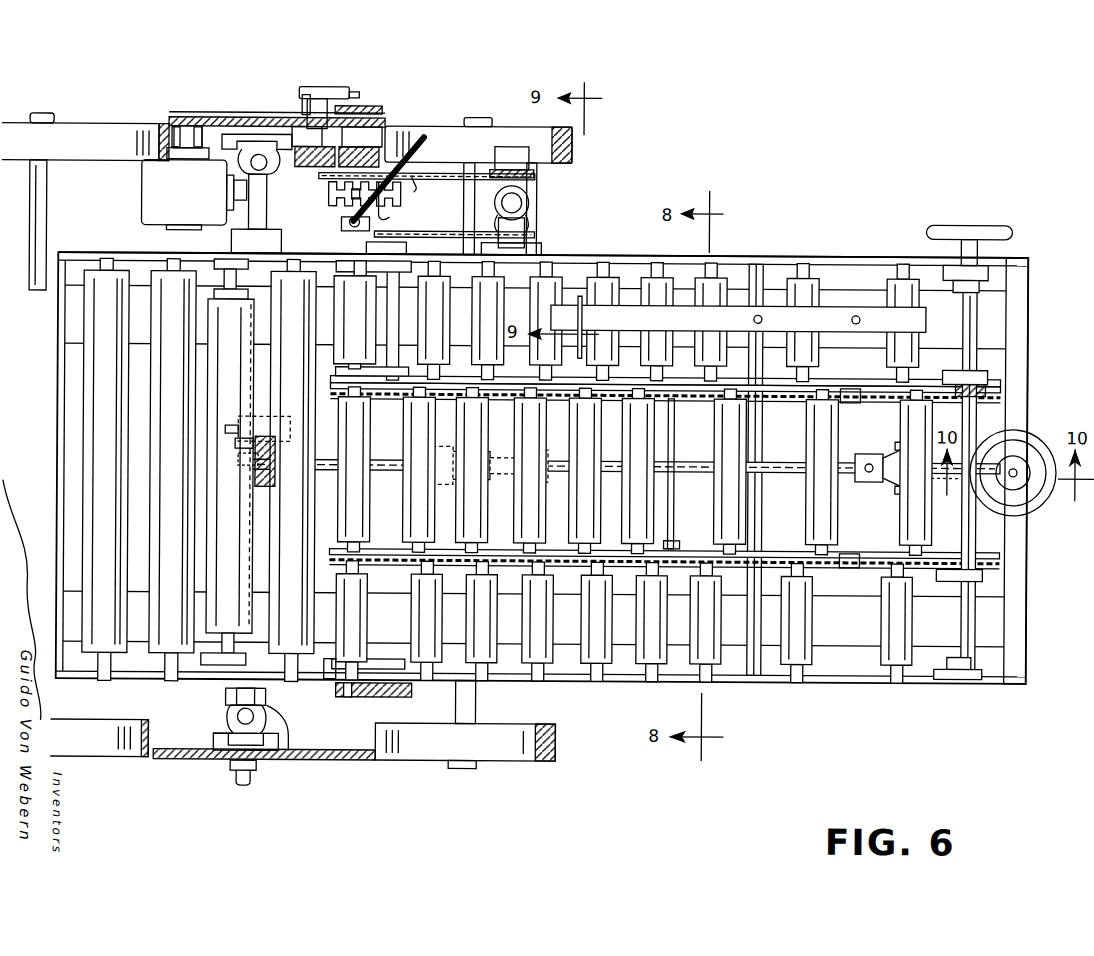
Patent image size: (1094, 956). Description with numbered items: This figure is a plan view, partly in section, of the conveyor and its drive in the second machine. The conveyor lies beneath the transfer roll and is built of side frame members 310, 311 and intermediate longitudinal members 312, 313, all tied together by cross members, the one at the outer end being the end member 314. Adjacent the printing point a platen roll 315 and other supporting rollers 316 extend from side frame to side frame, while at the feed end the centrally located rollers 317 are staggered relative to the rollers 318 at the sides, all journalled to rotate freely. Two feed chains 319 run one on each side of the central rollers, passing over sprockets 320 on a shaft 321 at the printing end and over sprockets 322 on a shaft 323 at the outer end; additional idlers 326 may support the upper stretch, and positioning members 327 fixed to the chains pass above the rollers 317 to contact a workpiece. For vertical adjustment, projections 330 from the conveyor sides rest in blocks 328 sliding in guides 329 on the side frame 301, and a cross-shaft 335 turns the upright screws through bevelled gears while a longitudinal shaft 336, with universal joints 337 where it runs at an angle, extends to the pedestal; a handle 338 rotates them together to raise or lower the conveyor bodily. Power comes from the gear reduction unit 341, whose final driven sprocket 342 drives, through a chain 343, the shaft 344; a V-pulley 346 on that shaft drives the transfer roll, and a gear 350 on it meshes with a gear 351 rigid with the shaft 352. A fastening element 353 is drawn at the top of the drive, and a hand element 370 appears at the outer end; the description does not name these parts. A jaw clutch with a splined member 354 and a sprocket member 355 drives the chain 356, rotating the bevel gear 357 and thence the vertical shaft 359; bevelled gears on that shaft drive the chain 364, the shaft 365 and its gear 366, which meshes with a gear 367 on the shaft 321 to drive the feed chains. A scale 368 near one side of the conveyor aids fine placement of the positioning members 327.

The side frame 301 is at (490, 751).
The side frame member 310 is at (768, 682).
The side frame member 311 is at (770, 262).
The intermediate longitudinal member 312 is at (774, 392).
The intermediate longitudinal member 313 is at (748, 556).
The end member 314 is at (1022, 290).
The platen roll 315 is at (207, 655).
The supporting rollers 316 is at (112, 656).
The centrally located rollers 317 is at (643, 460).
The side rollers 318 is at (806, 290).
The feed chains 319 is at (854, 394).
The sprockets 320 is at (337, 652).
The shaft 321 is at (323, 660).
The sprockets 322 is at (990, 395).
The shaft 323 is at (975, 338).
The additional idlers 326 is at (672, 546).
The positioning members 327 is at (674, 500).
The blocks 328 is at (255, 151).
The guides 329 is at (226, 135).
The projections 330 is at (266, 211).
The cross-shaft 335 is at (245, 282).
The longitudinal shaft 336 is at (742, 466).
The universal joints 337 is at (892, 462).
The handle 338 is at (236, 780).
The gear reduction unit 341 is at (193, 195).
The final driven sprocket 342 is at (168, 119).
The chain 343 is at (198, 119).
The shaft 344 is at (322, 95).
The V-pulley 346 is at (358, 97).
The gear 350 is at (318, 170).
The gear 351 is at (386, 135).
The shaft 352 is at (327, 198).
The bolt 353 is at (382, 110).
The jaw clutch member 354 is at (340, 226).
The jaw clutch member 355 is at (378, 195).
The chain 356 is at (412, 182).
The bevel gear 357 is at (522, 190).
The vertical shaft 359 is at (528, 203).
The chain 364 is at (452, 240).
The shaft 365 is at (376, 262).
The gear 366 is at (414, 694).
The gear 367 is at (352, 698).
The scale 368 is at (870, 305).
The hand wheel 370 is at (1012, 232).